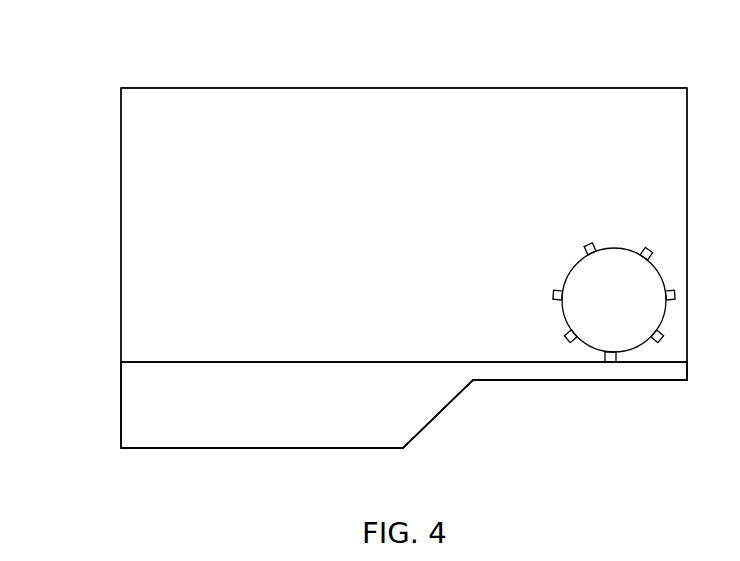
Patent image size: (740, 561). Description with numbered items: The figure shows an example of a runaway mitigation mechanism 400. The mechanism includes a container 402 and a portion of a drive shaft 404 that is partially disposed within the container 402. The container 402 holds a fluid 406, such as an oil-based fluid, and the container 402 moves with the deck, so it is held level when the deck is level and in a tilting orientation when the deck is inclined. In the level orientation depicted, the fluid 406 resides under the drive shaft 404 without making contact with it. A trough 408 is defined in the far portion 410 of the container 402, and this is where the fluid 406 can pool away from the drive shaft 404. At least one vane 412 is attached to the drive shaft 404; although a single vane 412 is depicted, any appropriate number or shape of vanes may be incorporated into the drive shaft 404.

The runaway mitigation mechanism 400 is at (186, 73).
The container 402 is at (420, 214).
The drive shaft 404 is at (632, 309).
The fluid 406 is at (282, 372).
The trough 408 is at (440, 412).
The far portion 410 is at (71, 409).
The vane 412 is at (588, 247).